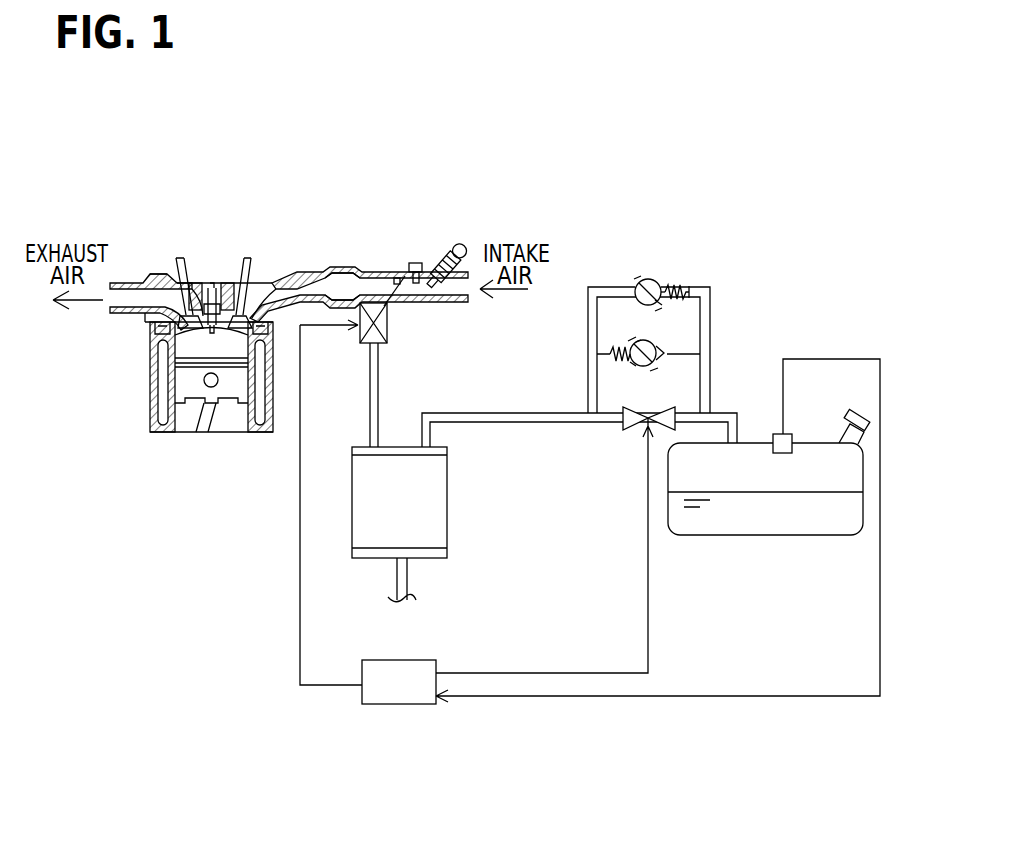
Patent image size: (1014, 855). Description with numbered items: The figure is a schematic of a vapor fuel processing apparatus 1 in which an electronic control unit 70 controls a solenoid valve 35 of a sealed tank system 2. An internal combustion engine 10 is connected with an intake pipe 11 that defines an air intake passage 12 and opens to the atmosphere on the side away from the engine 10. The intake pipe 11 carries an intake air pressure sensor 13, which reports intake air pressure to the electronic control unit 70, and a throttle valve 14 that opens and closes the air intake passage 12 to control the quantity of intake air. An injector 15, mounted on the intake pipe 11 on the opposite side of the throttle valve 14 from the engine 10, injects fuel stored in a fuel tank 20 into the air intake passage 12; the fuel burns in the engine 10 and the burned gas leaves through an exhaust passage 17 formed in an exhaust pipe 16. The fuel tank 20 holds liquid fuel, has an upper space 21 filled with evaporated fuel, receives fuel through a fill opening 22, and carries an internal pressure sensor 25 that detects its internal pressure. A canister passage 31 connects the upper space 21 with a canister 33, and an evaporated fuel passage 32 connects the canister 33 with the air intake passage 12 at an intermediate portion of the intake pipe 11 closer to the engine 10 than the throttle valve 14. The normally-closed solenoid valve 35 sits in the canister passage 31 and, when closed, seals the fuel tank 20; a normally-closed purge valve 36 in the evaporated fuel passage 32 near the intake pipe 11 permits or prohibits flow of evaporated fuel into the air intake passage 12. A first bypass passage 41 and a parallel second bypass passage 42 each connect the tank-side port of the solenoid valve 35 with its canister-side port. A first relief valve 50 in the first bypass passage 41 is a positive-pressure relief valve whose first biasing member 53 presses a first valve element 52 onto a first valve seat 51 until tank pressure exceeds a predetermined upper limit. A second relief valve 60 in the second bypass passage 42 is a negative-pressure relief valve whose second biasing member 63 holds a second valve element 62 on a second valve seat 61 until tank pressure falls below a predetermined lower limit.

The vapor fuel processing apparatus 1 is at (218, 718).
The sealed tank system 2 is at (658, 530).
The internal combustion engine 10 is at (149, 389).
The intake pipe 11 is at (331, 268).
The air intake passage 12 is at (358, 282).
The intake air pressure sensor 13 is at (414, 263).
The throttle valve 14 is at (396, 277).
The injector 15 is at (458, 252).
The exhaust pipe 16 is at (128, 285).
The exhaust passage 17 is at (151, 300).
The fuel tank 20 is at (802, 537).
The upper space 21 is at (755, 456).
The fill opening 22 is at (850, 414).
The internal pressure sensor 25 is at (787, 433).
The canister passage 31 is at (511, 412).
The evaporated fuel passage 32 is at (379, 377).
The canister 33 is at (447, 510).
The solenoid valve 35 is at (640, 433).
The purge valve 36 is at (388, 324).
The first bypass passage 41 is at (690, 355).
The second bypass passage 42 is at (610, 288).
The first relief valve 50 is at (654, 366).
The first valve seat 51 is at (633, 364).
The first valve element 52 is at (636, 343).
The first biasing member 53 is at (618, 358).
The second relief valve 60 is at (641, 281).
The second valve seat 61 is at (656, 301).
The second valve element 62 is at (663, 289).
The second biasing member 63 is at (687, 290).
The electronic control unit 70 is at (393, 705).